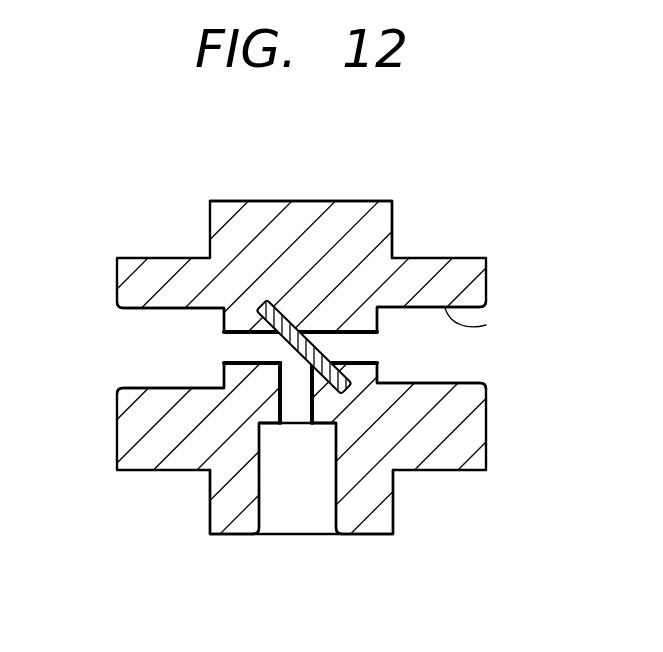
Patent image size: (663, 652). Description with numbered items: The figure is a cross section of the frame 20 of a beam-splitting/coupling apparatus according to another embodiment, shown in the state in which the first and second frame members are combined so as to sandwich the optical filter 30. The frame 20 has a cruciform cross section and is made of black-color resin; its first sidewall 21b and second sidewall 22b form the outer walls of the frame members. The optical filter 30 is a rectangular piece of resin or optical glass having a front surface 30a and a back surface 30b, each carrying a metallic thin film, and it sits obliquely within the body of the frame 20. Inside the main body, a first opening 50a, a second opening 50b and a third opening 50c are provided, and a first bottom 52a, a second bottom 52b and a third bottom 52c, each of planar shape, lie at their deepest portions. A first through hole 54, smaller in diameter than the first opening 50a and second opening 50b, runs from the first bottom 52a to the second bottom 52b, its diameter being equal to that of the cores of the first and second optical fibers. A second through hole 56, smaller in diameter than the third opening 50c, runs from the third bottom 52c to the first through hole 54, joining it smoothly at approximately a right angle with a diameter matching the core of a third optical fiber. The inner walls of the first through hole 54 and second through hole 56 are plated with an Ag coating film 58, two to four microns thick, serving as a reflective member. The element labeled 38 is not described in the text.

The frame 20 is at (327, 198).
The first sidewall 21b is at (209, 508).
The second sidewall 22b is at (392, 225).
The optical filter 30 is at (279, 303).
The front surface 30a is at (278, 390).
The back surface 30b is at (319, 312).
The valve seat 38 is at (445, 308).
The first opening 50a is at (154, 387).
The second opening 50b is at (487, 320).
The third opening 50c is at (261, 492).
The first bottom 52a is at (223, 323).
The second bottom 52b is at (379, 370).
The third bottom 52c is at (325, 425).
The first through hole 54 is at (361, 344).
The second through hole 56 is at (300, 400).
The Ag coating film 58 is at (276, 366).